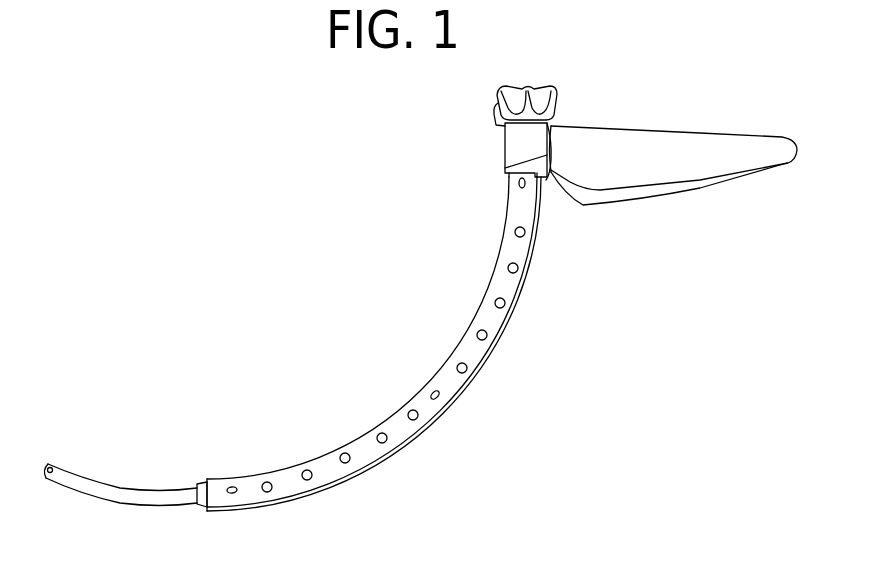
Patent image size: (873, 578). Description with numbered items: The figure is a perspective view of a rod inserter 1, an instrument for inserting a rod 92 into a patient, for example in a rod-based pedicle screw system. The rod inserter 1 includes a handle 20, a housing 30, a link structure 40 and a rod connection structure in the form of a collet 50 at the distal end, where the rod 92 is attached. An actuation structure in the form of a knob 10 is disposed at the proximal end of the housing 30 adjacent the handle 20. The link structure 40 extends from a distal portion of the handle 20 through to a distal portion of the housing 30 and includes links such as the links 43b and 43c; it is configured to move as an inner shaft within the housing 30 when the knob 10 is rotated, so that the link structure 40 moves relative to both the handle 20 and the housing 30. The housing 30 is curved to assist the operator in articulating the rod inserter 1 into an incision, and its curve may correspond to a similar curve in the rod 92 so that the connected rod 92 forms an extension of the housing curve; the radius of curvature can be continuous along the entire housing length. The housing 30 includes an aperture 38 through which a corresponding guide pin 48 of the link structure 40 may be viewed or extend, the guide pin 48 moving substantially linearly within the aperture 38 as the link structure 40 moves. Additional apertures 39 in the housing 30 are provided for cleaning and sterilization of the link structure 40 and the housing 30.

The rod inserter 1 is at (280, 248).
The knob 10 is at (496, 107).
The handle 20 is at (673, 152).
The housing 30 is at (470, 351).
The aperture 38 is at (432, 391).
The additional apertures 39 is at (412, 409).
The link structure 40 is at (307, 470).
The link 43b is at (488, 336).
The link 43c is at (345, 453).
The guide pin 48 is at (517, 184).
The collet 50 is at (200, 484).
The rod 92 is at (134, 488).